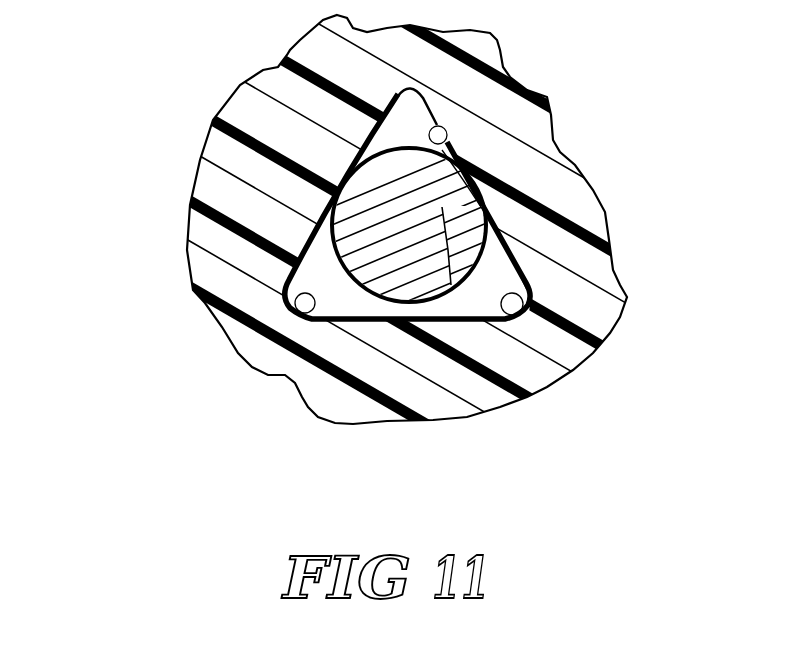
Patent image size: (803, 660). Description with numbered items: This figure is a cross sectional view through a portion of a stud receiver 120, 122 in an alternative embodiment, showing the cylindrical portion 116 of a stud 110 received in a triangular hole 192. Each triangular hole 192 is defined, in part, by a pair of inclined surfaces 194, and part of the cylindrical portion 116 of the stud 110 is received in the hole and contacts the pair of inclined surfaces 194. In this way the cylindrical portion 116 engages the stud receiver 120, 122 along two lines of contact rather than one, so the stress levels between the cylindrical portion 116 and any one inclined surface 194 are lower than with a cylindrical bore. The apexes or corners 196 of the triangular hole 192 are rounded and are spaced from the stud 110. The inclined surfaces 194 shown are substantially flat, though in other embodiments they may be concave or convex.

The stud 110 is at (430, 258).
The cylindrical portion 116 is at (503, 262).
The movable stud receiver 120 is at (351, 280).
The fixed stud receiver 122 is at (200, 112).
The triangular hole 192 is at (485, 288).
The inclined surfaces 194 is at (449, 143).
The corners 196 is at (440, 140).